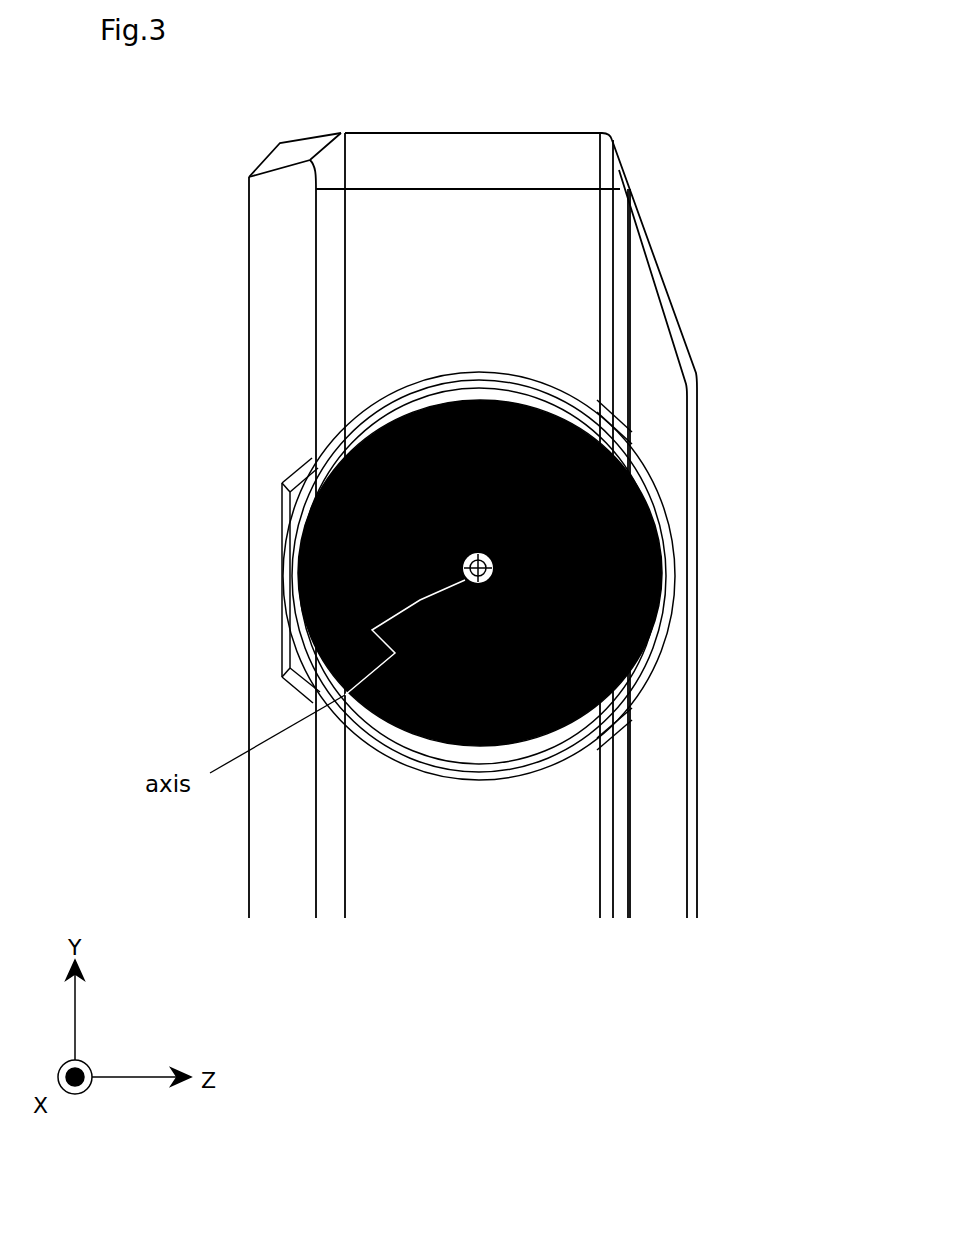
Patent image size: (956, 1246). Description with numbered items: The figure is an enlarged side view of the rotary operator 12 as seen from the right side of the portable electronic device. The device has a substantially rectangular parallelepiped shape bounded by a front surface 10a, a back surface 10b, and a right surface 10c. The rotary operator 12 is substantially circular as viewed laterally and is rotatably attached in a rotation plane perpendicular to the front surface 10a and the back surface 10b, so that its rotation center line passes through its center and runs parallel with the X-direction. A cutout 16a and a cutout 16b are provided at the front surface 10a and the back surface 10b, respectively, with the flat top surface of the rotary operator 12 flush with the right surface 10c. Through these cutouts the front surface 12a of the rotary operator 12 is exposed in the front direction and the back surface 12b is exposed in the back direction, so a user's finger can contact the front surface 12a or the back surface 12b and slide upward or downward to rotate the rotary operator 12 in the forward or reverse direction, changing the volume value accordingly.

The front surface 10a is at (247, 247).
The back surface 10b is at (700, 450).
The right surface 10c is at (502, 288).
The rotary operator 12 is at (465, 526).
The front surface 12a is at (282, 585).
The back surface 12b is at (673, 578).
The cutout 16a is at (282, 510).
The cutout 16b is at (660, 490).